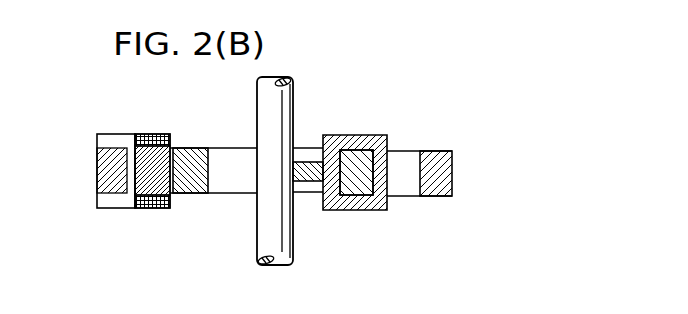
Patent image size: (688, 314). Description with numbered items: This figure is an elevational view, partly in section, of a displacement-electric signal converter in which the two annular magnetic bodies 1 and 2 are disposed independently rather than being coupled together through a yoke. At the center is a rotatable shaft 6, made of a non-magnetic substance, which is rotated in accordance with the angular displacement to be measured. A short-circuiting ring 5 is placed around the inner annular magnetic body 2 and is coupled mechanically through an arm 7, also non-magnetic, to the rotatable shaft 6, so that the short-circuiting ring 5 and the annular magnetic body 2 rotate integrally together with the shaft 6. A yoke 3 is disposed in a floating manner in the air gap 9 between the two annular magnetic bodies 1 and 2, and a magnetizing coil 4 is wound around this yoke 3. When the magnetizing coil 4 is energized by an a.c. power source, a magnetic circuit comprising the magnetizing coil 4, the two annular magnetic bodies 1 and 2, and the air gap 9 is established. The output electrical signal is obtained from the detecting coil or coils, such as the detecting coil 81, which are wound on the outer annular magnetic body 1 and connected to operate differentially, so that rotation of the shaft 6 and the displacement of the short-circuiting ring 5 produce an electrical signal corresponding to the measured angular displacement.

The annular magnetic body 1 is at (440, 151).
The annular magnetic body 2 is at (363, 186).
The yoke 3 is at (182, 188).
The magnetizing coil 4 is at (156, 135).
The short-circuiting ring 5 is at (360, 137).
The rotatable shaft 6 is at (292, 110).
The arm 7 is at (313, 182).
The air gap 9 is at (407, 183).
The detecting coil 81 is at (112, 203).